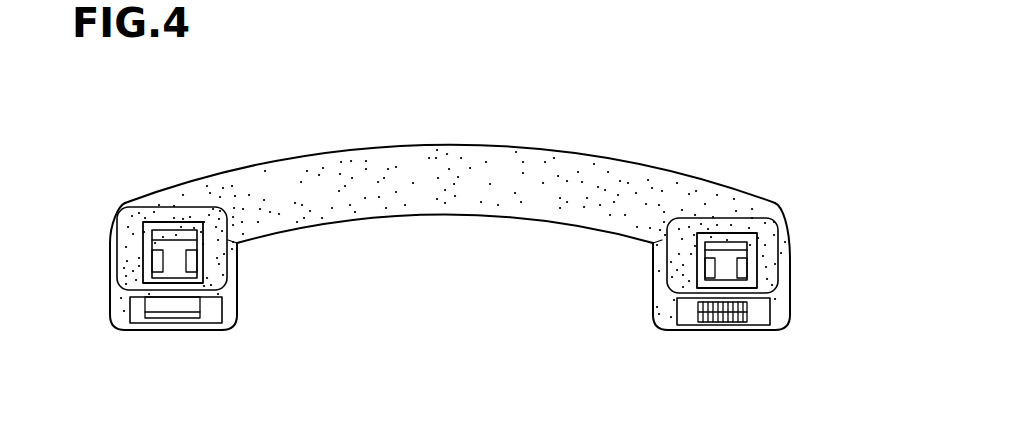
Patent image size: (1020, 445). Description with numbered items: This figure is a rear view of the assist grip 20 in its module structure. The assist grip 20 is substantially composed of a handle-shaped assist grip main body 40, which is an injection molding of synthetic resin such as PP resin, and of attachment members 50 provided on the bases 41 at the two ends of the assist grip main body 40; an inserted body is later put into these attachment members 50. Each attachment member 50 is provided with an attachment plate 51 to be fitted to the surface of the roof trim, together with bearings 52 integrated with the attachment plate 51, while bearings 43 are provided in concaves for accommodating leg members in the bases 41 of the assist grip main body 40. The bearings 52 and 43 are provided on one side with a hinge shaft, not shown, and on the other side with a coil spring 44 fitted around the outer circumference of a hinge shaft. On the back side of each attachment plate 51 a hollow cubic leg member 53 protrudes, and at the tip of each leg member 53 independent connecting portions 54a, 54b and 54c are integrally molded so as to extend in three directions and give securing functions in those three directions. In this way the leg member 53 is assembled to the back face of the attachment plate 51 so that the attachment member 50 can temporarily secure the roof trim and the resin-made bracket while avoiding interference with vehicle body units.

The assist grip 20 is at (237, 143).
The assist grip main body 40 is at (475, 157).
The base 41 is at (170, 192).
The bearing 43 is at (172, 330).
The coil spring 44 is at (730, 325).
The attachment member 50 is at (110, 278).
The attachment plate 51 is at (233, 247).
The bearing 52 is at (133, 330).
The leg member 53 is at (117, 240).
The connecting portion 54a is at (143, 232).
The connecting portion 54b is at (150, 268).
The connecting portion 54c is at (203, 263).